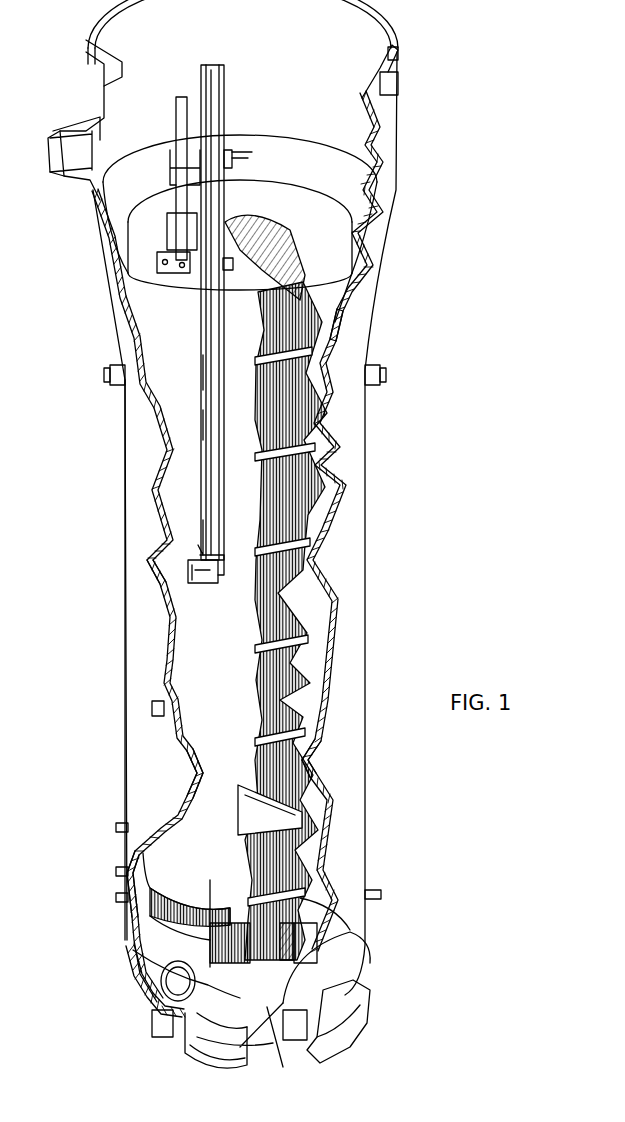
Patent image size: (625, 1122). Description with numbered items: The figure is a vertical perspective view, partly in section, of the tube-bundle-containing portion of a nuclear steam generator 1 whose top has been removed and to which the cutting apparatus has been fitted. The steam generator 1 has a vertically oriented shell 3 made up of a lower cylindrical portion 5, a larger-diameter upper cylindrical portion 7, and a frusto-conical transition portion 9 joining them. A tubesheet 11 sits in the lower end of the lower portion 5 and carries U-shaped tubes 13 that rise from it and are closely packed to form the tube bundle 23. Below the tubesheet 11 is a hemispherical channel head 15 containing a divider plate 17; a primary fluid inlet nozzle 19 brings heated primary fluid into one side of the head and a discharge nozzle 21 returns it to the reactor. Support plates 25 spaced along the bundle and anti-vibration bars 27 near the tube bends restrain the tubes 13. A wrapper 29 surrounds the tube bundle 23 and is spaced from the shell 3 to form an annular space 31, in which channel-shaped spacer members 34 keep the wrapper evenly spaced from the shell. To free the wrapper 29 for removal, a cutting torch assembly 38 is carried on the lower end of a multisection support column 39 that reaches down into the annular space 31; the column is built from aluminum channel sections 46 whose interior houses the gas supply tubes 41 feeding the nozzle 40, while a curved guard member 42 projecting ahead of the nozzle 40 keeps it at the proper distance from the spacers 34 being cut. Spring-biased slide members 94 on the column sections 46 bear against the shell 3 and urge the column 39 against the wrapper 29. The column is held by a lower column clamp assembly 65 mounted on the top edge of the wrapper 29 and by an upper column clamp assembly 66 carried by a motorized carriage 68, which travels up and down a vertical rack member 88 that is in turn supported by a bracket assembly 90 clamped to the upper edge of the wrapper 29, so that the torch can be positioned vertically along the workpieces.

The electric water heater 1 is at (392, 637).
The shell 3 is at (387, 125).
The lower cylindrical portion 5 is at (352, 583).
The upper cylindrical portion 7 is at (385, 103).
The frusto-conical transition portion 9 is at (372, 238).
The tubesheet 11 is at (208, 955).
The U-shaped tubes 13 is at (306, 752).
The channel head 15 is at (360, 960).
The divider plate 17 is at (280, 1050).
The primary fluid inlet nozzle 19 is at (195, 1058).
The discharge nozzle 21 is at (355, 1048).
The tube bundle 23 is at (262, 695).
The support plates 25 is at (307, 427).
The anti-vibration bars 27 is at (298, 245).
The wrapper 29 is at (188, 758).
The annular space 31 is at (132, 856).
The channel-shaped spacer members 34 is at (326, 477).
The cutting torch assembly 38 is at (217, 573).
The support column 39 is at (211, 108).
The nozzle 40 is at (202, 572).
The supply tubes 41 is at (205, 545).
The guard member 42 is at (165, 563).
The channel sections 46 is at (206, 67).
The column clamp assembly 65 is at (228, 266).
The upper column clamp assembly 66 is at (232, 163).
The motorized carriage 68 is at (172, 162).
The rack member 88 is at (182, 97).
The bracket assembly 90 is at (180, 270).
The slide members 94 is at (206, 370).